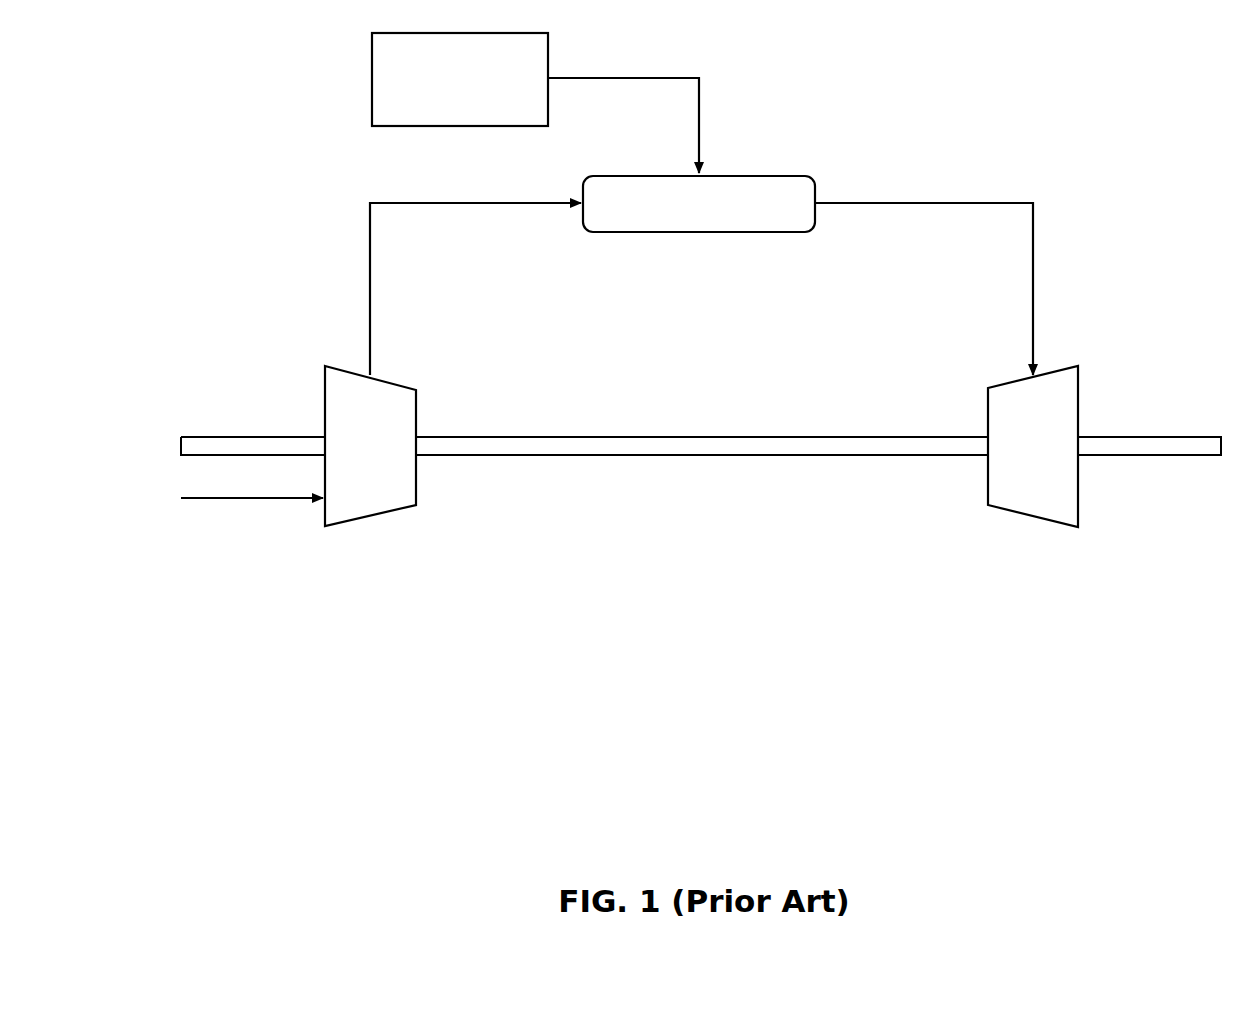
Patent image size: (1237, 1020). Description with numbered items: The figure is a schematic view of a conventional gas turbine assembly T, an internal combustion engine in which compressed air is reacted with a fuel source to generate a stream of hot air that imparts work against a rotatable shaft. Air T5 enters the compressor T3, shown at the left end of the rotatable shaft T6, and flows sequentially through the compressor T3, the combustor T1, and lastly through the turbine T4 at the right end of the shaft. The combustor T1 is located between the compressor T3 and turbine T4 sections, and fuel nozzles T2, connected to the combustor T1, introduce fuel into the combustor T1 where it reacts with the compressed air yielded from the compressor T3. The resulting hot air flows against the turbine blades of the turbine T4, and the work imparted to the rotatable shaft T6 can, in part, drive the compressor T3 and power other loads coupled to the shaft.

The combustor T1 is at (686, 218).
The fuel nozzles T2 is at (445, 94).
The compressor T3 is at (356, 458).
The turbine T4 is at (1018, 458).
The air T5 is at (252, 500).
The rotatable shaft T6 is at (837, 437).
The gas turbine assembly T is at (595, 535).